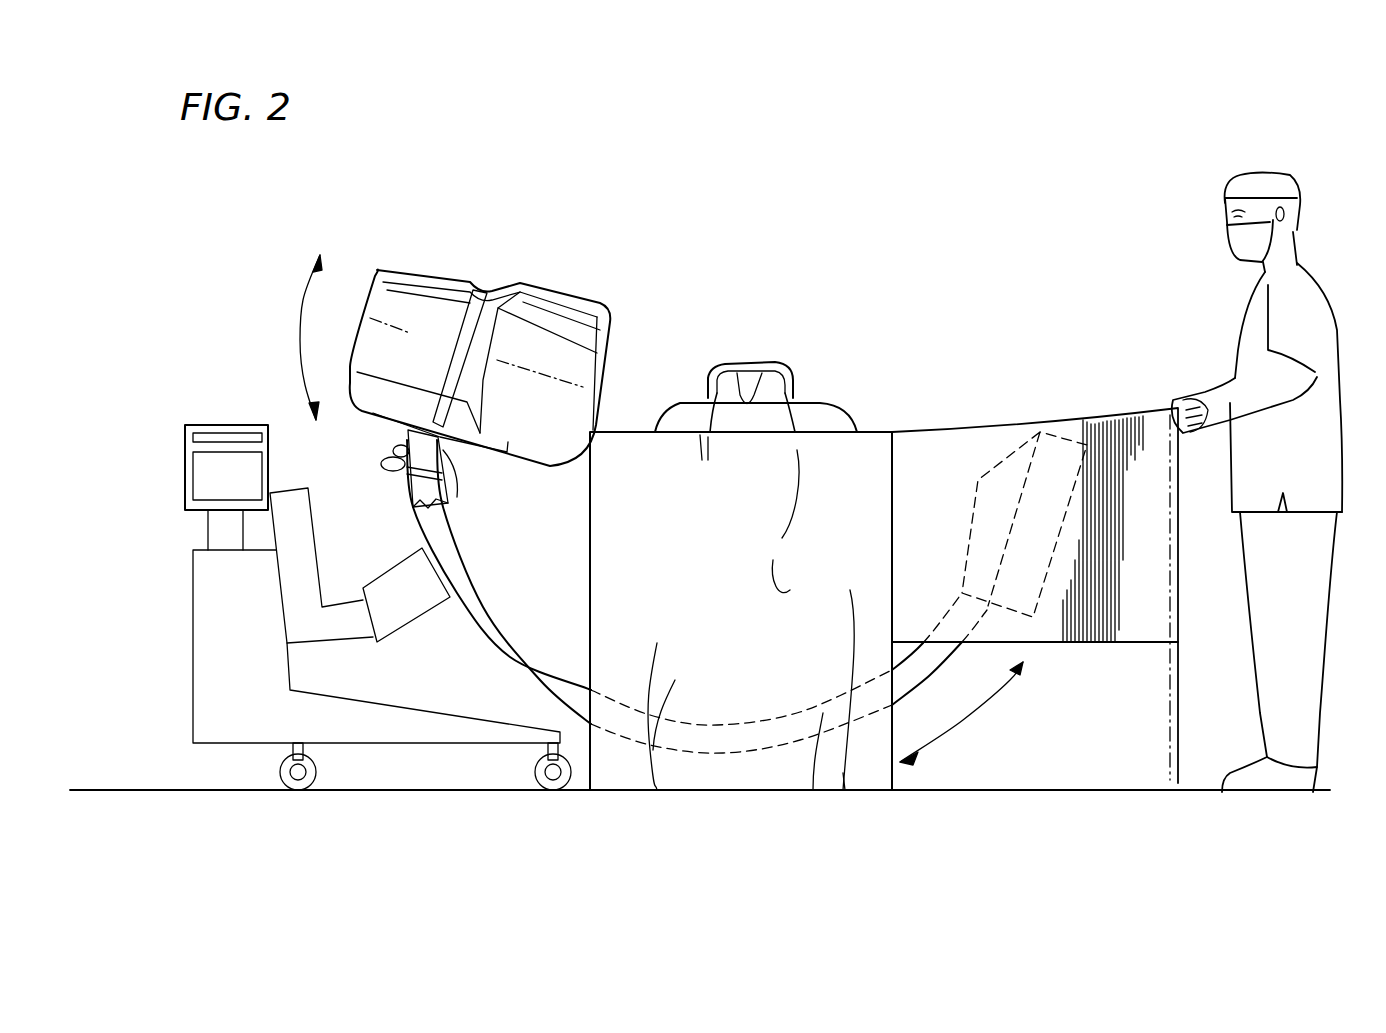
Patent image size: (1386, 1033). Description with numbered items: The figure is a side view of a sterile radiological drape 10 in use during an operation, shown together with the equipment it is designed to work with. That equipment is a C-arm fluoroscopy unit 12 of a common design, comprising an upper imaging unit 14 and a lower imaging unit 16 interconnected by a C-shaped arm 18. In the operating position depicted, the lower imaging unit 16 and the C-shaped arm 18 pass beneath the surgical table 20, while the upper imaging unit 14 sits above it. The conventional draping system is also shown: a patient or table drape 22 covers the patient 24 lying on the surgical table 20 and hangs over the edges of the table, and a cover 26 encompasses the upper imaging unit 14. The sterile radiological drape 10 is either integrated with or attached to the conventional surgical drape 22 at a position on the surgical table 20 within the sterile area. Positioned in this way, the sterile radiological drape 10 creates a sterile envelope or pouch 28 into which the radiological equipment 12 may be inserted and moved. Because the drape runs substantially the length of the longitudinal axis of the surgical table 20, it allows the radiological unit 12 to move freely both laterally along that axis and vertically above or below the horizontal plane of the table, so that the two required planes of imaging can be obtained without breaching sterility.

The radiological sterile drape 10 is at (1148, 412).
The C-arm fluoroscopy unit 12 is at (220, 425).
The upper imaging unit 14 is at (442, 328).
The lower imaging unit 16 is at (1027, 590).
The C-shaped arm 18 is at (743, 752).
The surgical table 20 is at (620, 432).
The patient or table drape 22 is at (838, 403).
The patient 24 is at (748, 362).
The cover 26 is at (488, 466).
The sterile envelope or pouch 28 is at (1107, 433).